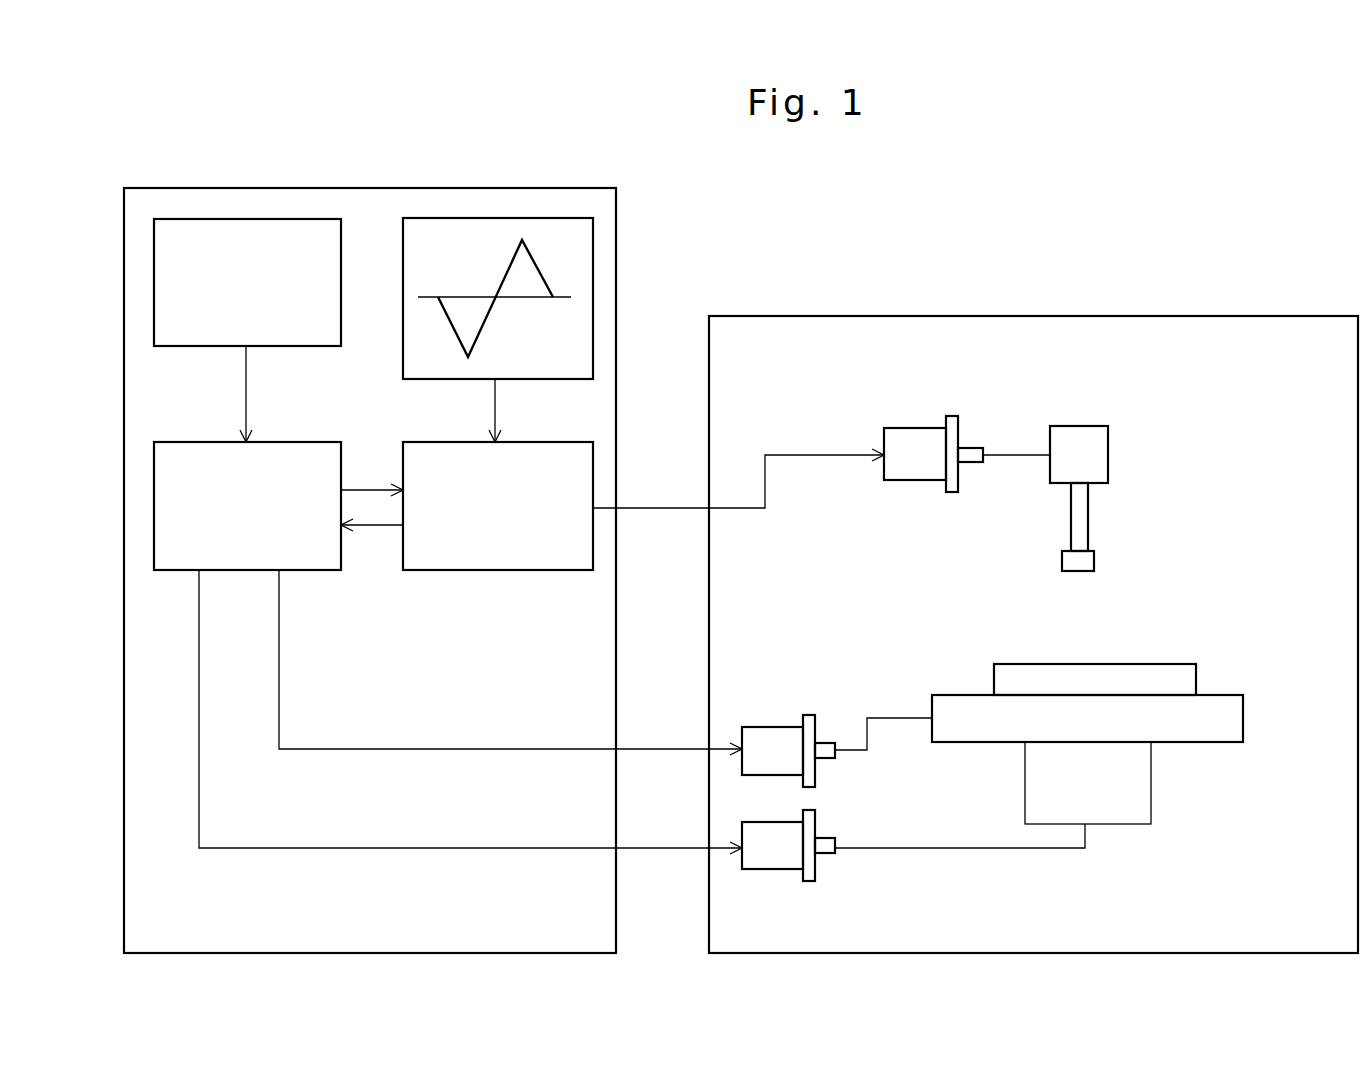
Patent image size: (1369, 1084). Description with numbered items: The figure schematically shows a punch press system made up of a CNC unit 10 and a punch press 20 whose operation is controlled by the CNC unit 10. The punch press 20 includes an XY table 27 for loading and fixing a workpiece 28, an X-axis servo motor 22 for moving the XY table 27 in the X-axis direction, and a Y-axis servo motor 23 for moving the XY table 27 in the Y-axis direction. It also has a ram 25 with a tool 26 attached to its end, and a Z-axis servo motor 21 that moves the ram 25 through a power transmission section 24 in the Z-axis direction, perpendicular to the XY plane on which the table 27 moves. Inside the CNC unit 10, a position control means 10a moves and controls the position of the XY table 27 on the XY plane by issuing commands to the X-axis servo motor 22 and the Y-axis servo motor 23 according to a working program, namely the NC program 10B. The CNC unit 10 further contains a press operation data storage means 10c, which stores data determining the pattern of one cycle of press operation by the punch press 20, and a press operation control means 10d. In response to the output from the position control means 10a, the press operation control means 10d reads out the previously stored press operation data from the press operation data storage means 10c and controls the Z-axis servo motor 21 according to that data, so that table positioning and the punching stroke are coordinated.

The CNC unit 10 is at (465, 188).
The working program (NC program) 10B is at (230, 219).
The press operation data storage means 10c is at (593, 255).
The position control means 10a is at (298, 442).
The press operation control means 10d is at (565, 442).
The punch press 20 is at (1062, 316).
The Z-axis servo motor 21 is at (920, 428).
The X-axis servo motor 22 is at (775, 727).
The Y-axis servo motor 23 is at (785, 869).
The power transmission section 24 is at (1108, 437).
The ram 25 is at (1088, 520).
The tool 26 is at (1094, 560).
The XY table 27 is at (1243, 715).
The workpiece 28 is at (1175, 664).